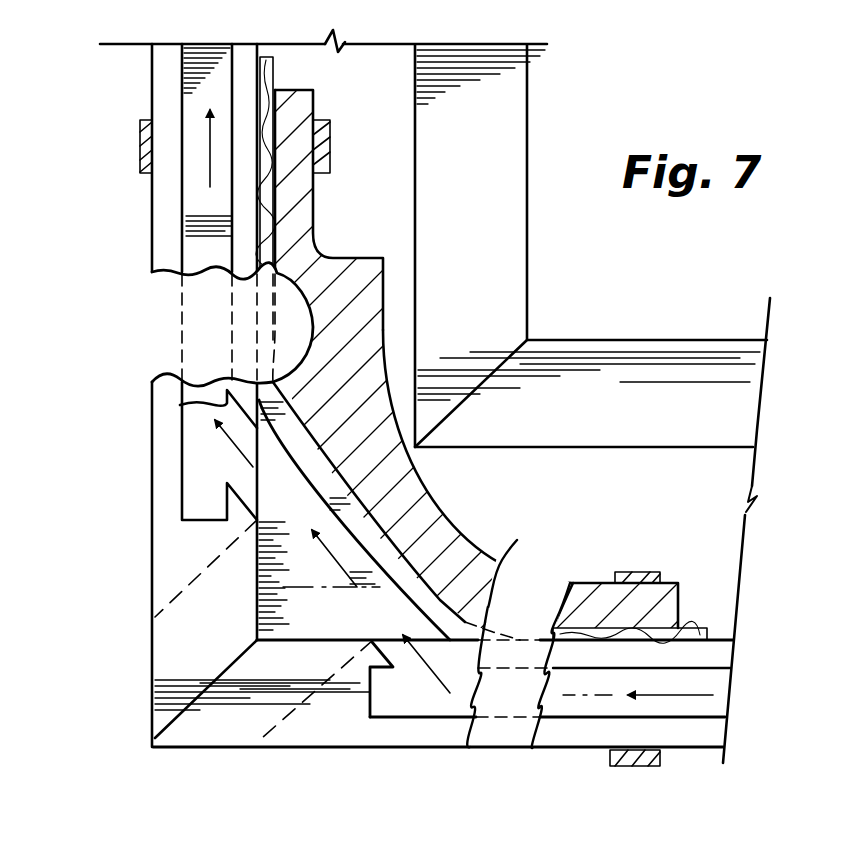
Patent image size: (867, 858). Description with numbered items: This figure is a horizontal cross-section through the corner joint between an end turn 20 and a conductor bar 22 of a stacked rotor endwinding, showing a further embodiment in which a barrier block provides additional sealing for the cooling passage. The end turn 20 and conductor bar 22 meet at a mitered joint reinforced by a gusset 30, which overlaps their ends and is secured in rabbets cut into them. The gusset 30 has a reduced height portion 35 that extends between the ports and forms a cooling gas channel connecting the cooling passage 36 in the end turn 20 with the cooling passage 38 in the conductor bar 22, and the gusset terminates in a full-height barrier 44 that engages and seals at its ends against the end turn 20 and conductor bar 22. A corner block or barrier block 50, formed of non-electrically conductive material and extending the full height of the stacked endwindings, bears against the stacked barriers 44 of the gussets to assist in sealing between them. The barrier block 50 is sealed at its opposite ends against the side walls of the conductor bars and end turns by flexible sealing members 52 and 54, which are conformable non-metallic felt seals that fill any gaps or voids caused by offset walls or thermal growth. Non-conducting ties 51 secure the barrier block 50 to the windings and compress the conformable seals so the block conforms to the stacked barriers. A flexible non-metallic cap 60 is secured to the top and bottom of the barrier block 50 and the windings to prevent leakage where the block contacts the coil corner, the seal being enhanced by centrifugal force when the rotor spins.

The end turn 20 is at (440, 748).
The conductor bar 22 is at (148, 212).
The gusset 30 is at (319, 576).
The reduced height portion 35 is at (304, 610).
The cooling passage 36 is at (563, 673).
The cooling passage 38 is at (195, 470).
The barrier 44 is at (300, 468).
The barrier block 50 is at (340, 273).
The tie 51 is at (140, 137).
The sealing member 52 is at (697, 623).
The sealing member 54 is at (274, 70).
The cap 60 is at (175, 338).